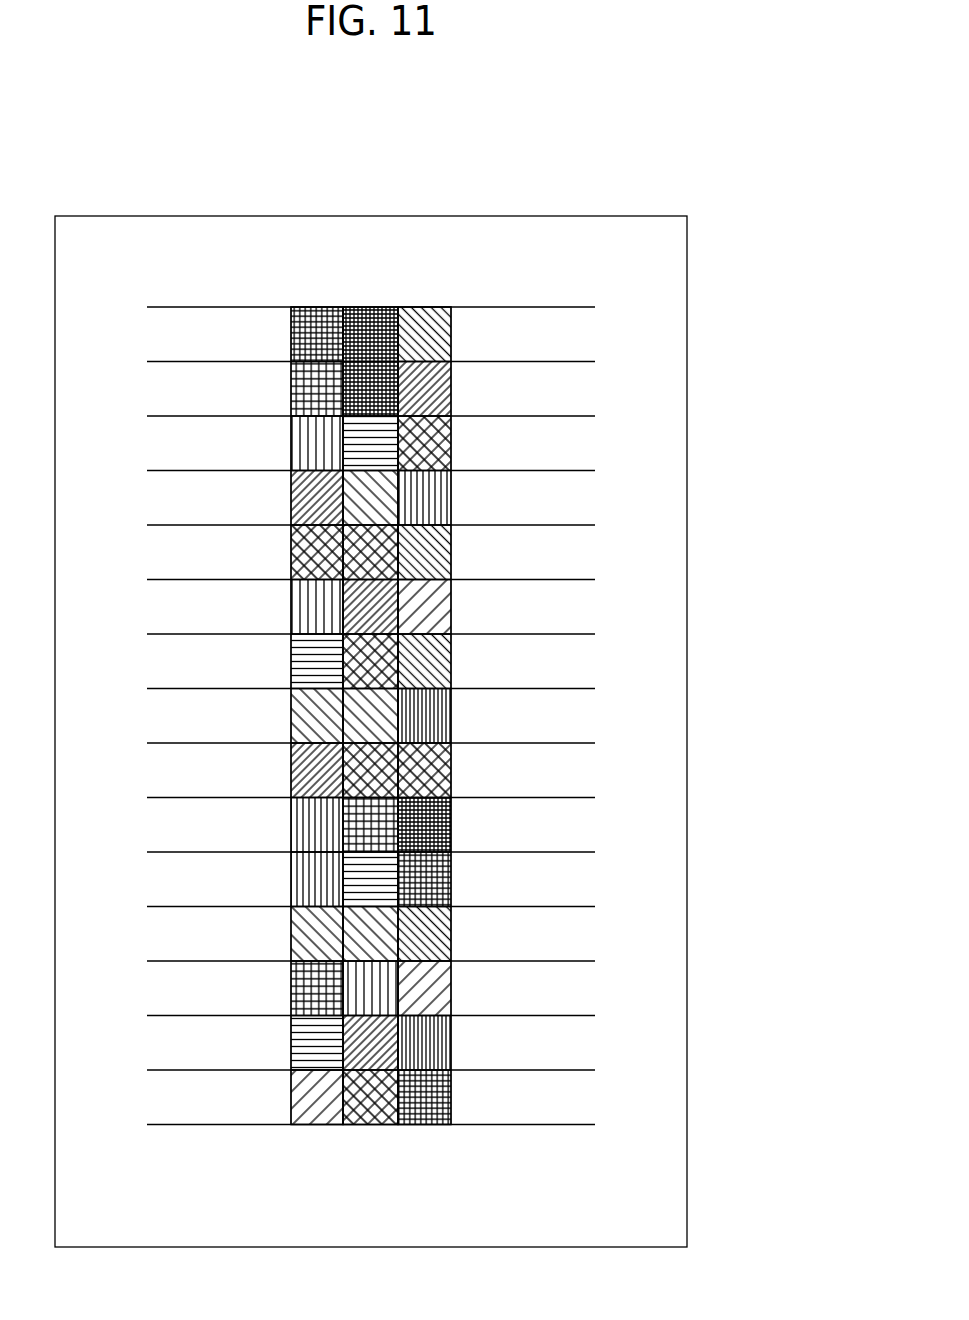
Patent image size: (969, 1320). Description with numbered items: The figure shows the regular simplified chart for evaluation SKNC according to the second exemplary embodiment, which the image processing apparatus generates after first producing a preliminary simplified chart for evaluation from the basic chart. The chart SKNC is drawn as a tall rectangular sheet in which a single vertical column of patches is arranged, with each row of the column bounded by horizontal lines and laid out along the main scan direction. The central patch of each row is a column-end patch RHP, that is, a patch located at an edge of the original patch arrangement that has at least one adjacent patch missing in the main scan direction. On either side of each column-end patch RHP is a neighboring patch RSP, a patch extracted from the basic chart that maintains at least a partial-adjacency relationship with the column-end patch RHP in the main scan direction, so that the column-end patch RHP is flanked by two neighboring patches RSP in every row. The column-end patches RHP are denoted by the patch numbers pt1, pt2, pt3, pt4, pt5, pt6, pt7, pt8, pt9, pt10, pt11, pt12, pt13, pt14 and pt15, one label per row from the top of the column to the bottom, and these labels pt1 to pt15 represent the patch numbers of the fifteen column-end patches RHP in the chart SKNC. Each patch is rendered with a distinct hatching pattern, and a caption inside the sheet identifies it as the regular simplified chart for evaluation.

The regular simplified chart for evaluation SKNC is at (626, 202).
The column-end patch RHP is at (398, 301).
The neighboring patch RSP is at (487, 188).
The patch number pt1 is at (382, 333).
The patch number pt2 is at (382, 388).
The patch number pt3 is at (382, 442).
The patch number pt4 is at (382, 497).
The patch number pt5 is at (382, 551).
The patch number pt6 is at (382, 606).
The patch number pt7 is at (382, 660).
The patch number pt8 is at (382, 715).
The patch number pt9 is at (382, 769).
The patch number pt10 is at (382, 824).
The patch number pt11 is at (382, 878).
The patch number pt12 is at (382, 933).
The patch number pt13 is at (382, 987).
The patch number pt14 is at (382, 1042).
The patch number pt15 is at (382, 1096).